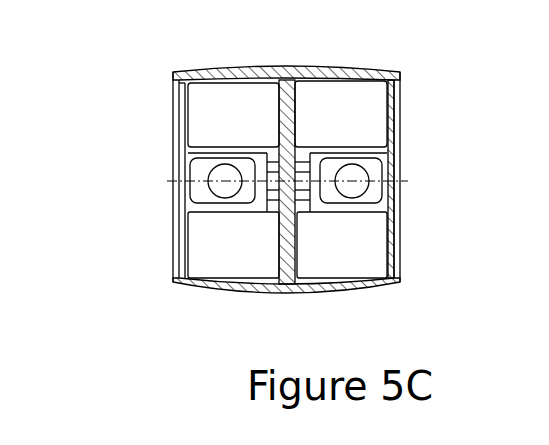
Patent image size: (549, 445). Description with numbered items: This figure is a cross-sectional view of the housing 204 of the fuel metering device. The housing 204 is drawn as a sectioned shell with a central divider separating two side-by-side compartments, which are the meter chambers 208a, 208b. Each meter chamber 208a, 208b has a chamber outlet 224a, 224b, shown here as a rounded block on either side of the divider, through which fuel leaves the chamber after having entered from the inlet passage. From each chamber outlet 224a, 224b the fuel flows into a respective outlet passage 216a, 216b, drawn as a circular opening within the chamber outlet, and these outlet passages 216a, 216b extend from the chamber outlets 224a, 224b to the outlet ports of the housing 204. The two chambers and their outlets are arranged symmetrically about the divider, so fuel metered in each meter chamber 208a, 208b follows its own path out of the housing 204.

The housing 204 is at (288, 72).
The meter chamber 208a is at (247, 124).
The meter chamber 208b is at (367, 118).
The outlet passage 216a is at (213, 176).
The outlet passage 216b is at (362, 176).
The chamber outlet 224a is at (192, 200).
The chamber outlet 224b is at (385, 195).